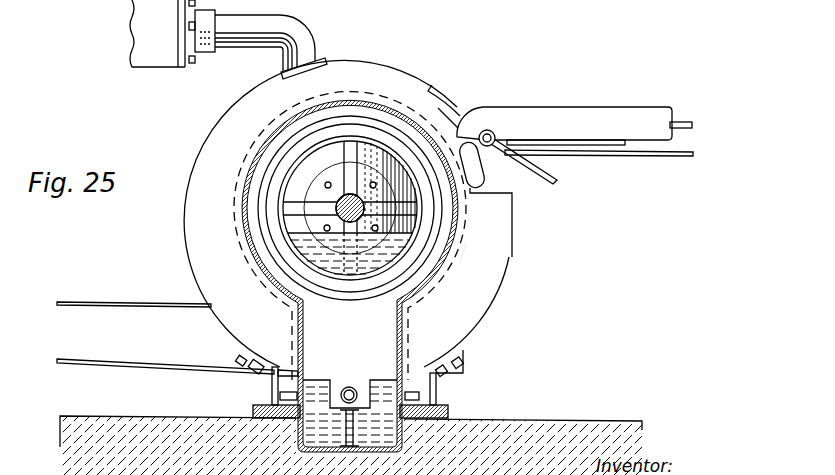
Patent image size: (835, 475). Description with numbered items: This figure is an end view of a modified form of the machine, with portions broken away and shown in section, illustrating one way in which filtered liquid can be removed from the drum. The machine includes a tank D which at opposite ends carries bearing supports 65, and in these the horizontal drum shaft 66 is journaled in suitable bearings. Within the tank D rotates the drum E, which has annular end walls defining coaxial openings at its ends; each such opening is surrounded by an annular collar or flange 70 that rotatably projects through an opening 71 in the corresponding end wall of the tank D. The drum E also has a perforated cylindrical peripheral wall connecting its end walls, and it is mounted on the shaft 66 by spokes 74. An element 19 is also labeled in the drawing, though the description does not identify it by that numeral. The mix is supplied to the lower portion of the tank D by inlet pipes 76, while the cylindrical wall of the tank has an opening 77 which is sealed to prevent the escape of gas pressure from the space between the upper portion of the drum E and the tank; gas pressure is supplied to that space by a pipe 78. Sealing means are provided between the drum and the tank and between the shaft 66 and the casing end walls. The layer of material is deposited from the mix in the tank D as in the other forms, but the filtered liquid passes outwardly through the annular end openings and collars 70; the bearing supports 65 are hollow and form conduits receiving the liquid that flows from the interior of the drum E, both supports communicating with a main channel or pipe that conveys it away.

The rotor drum 19 is at (425, 243).
The bearing supports 65 is at (394, 101).
The horizontal drum shaft 66 is at (336, 184).
The annular collar or flange 70 is at (268, 210).
The opening in end wall of tank 71 is at (284, 234).
The spokes 74 is at (295, 200).
The inlet pipes 76 is at (351, 387).
The opening in cylindrical wall of tank 77 is at (444, 104).
The gas pressure pipe 78 is at (291, 39).
The tank D is at (230, 132).
The drum E is at (462, 264).